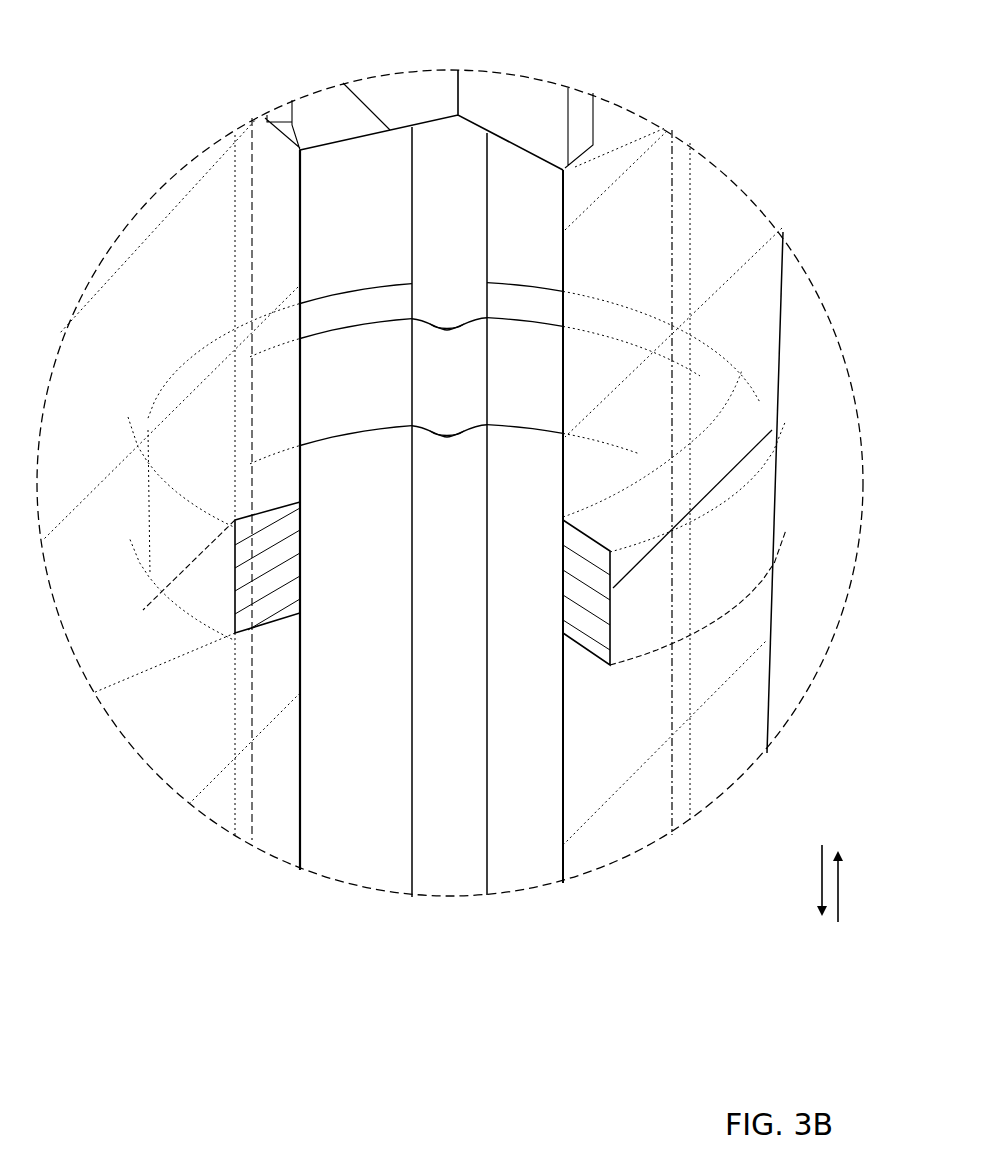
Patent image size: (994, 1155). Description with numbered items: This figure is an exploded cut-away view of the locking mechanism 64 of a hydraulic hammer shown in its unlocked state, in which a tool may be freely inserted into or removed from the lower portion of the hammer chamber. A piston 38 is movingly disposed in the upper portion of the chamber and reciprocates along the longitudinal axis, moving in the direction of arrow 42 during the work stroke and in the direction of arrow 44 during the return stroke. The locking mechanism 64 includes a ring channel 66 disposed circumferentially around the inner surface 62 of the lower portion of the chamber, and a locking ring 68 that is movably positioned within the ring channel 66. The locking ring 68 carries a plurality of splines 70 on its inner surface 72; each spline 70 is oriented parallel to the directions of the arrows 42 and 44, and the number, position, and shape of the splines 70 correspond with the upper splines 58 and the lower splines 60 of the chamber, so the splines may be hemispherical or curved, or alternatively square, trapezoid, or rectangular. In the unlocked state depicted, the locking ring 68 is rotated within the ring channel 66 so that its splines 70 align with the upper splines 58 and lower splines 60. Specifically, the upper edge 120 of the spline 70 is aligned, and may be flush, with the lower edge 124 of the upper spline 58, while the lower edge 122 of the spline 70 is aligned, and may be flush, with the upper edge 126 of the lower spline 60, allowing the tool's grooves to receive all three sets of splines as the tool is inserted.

The piston 38 is at (508, 103).
The arrow 42 is at (808, 879).
The arrow 44 is at (852, 887).
The upper splines 58 is at (438, 155).
The lower splines 60 is at (455, 845).
The inner surface 62 is at (358, 833).
The locking mechanism 64 is at (130, 72).
The ring channel 66 is at (205, 475).
The locking ring 68 is at (277, 542).
The splines 70 is at (443, 395).
The inner surface 72 is at (520, 360).
The upper edge 120 is at (447, 335).
The lower edge 122 is at (448, 426).
The lower edge 124 is at (446, 325).
The upper edge 126 is at (448, 444).